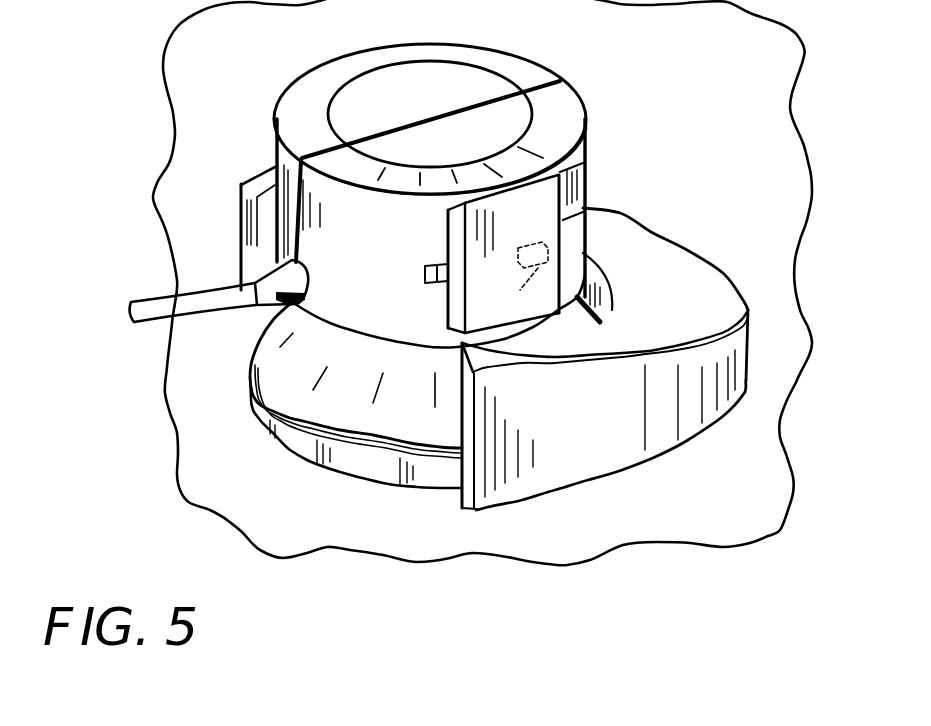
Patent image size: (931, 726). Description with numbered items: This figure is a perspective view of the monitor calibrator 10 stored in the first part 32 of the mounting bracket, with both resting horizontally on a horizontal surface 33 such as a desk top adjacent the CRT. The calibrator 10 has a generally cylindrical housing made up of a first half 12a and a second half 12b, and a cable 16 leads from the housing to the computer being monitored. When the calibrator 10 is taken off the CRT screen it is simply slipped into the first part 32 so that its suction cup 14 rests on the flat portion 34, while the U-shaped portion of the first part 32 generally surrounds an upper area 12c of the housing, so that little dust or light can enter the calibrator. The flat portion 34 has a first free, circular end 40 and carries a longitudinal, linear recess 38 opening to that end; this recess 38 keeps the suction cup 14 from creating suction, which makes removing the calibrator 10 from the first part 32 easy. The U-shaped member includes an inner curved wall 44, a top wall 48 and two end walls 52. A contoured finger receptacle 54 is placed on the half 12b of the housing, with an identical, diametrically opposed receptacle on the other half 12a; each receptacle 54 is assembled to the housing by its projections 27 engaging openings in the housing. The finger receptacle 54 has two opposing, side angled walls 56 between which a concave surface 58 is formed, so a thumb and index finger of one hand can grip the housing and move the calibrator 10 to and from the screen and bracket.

The monitor calibrator 10 is at (636, 51).
The first half of housing 12a is at (471, 43).
The second half of housing 12b is at (590, 112).
The upper area of housing 12c is at (575, 250).
The suction cup 14 is at (250, 342).
The cable 16 is at (152, 303).
The projections 27 is at (428, 200).
The first part of mounting bracket 32 is at (590, 475).
The horizontal surface 33 is at (797, 113).
The flat portion 34 is at (389, 487).
The longitudinal linear recess 38 is at (253, 404).
The first free circular end 40 is at (270, 437).
The inner curved wall 44 is at (612, 312).
The top wall 48 is at (715, 287).
The end walls 52 is at (237, 247).
The finger receptacle 54 is at (592, 212).
The side angled walls 56 is at (593, 210).
The concave surface 58 is at (541, 226).